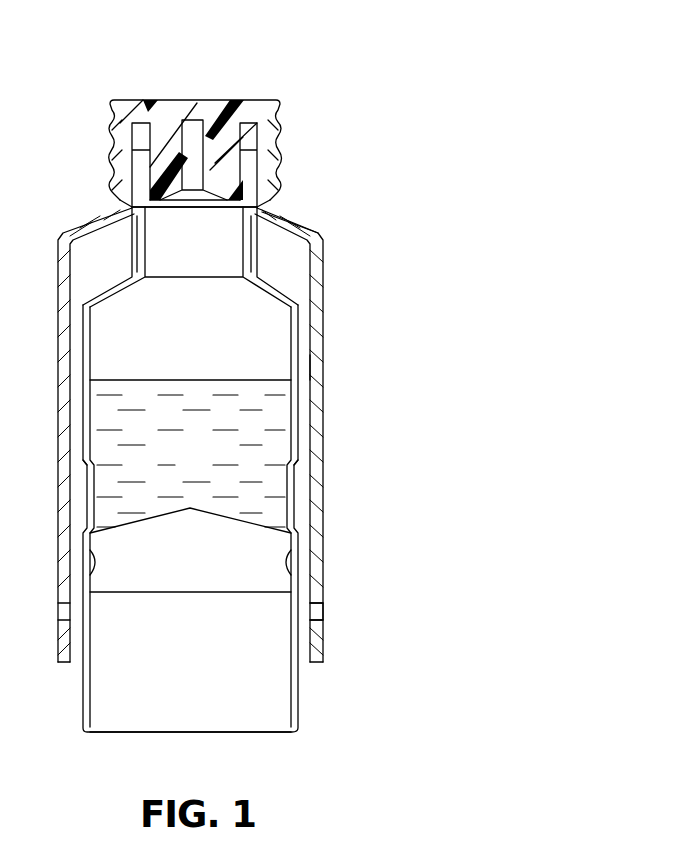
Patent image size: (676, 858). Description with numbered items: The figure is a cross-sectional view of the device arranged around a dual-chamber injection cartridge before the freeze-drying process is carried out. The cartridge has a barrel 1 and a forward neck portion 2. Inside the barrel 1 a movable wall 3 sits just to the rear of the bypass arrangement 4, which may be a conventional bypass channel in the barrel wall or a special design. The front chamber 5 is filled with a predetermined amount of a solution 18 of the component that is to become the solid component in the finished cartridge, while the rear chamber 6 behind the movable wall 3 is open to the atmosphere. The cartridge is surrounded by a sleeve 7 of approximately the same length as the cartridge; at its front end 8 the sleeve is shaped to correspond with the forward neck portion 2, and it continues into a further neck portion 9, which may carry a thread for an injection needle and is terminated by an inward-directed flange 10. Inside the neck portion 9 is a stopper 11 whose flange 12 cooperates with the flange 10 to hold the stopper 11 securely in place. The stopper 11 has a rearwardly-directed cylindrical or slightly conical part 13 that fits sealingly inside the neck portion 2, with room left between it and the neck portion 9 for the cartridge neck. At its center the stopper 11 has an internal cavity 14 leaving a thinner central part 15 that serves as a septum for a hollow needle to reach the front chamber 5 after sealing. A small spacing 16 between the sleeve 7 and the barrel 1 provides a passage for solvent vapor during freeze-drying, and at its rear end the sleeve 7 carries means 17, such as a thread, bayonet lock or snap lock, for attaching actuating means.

The barrel 1 is at (78, 700).
The forward neck portion 2 is at (137, 240).
The movable wall 3 is at (190, 561).
The bypass arrangement 4 is at (85, 490).
The front chamber 5 is at (190, 329).
The rear chamber 6 is at (190, 658).
The sleeve 7 is at (323, 307).
The front end 8 is at (297, 217).
The neck portion 9 is at (110, 135).
The inward-directed flange 10 is at (138, 98).
The stopper 11 is at (222, 155).
The flange 12 is at (247, 140).
The cylindrical part 13 is at (147, 182).
The internal cavity 14 is at (200, 133).
The thinner central part 15 is at (188, 98).
The spacing 16 is at (307, 367).
The attaching means 17 is at (313, 618).
The solution 18 is at (190, 464).